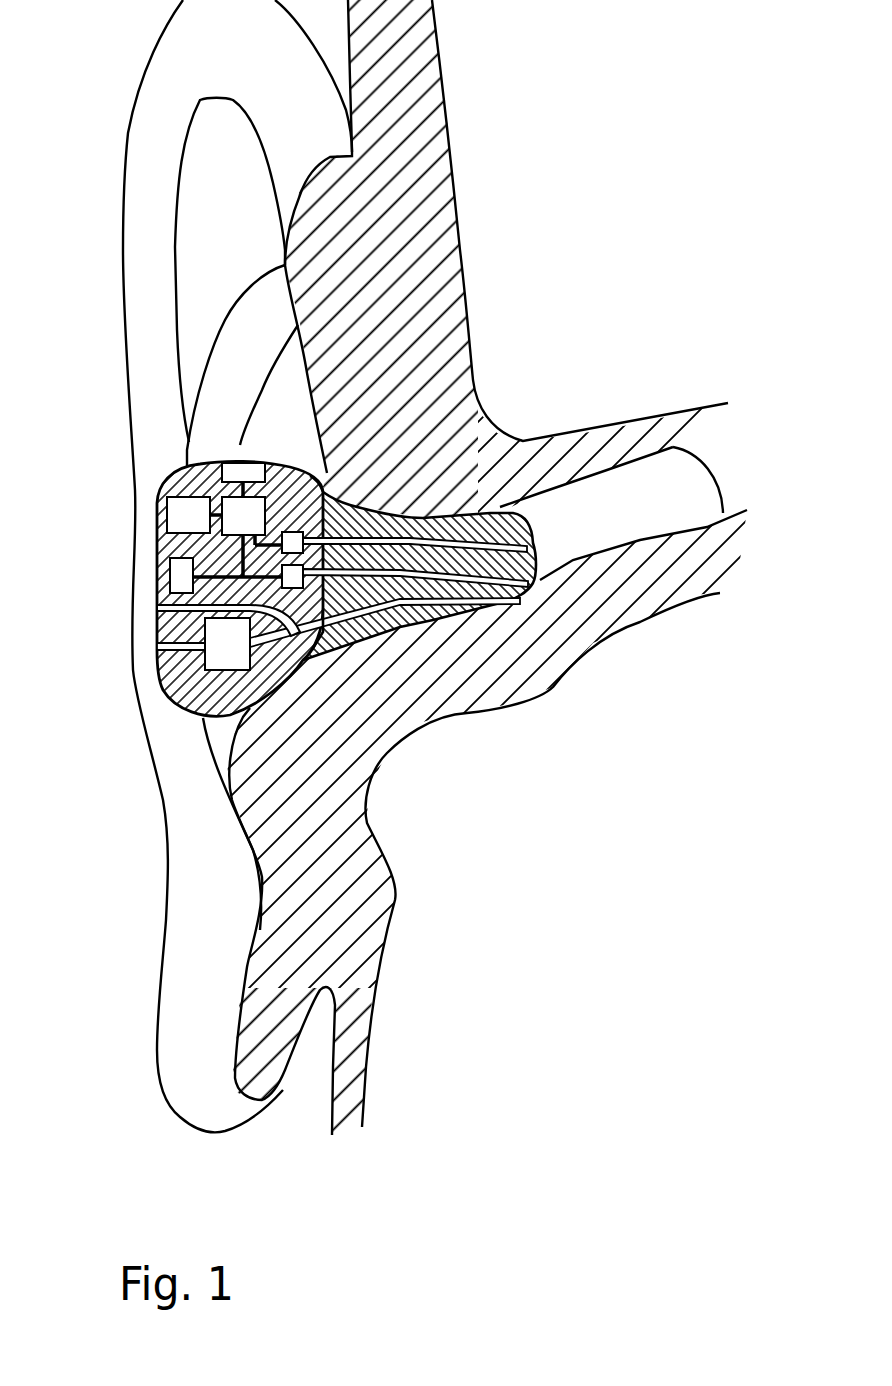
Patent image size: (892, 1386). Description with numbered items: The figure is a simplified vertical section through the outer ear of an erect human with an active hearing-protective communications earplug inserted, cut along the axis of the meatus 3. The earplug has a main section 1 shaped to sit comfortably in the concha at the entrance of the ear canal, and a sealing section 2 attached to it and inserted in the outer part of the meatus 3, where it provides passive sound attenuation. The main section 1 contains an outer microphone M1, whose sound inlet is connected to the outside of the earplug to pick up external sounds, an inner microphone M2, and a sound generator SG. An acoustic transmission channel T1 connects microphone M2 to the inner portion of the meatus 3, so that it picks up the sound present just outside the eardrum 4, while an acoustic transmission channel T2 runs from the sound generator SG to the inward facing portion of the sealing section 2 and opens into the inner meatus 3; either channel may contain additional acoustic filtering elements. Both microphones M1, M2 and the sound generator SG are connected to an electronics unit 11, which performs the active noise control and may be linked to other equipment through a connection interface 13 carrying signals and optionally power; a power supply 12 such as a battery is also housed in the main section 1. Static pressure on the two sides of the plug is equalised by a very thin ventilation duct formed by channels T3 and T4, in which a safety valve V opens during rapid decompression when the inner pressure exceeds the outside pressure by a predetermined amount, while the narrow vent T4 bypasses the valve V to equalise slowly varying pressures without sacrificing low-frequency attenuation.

The main section 1 is at (240, 588).
The sealing section 2 is at (419, 576).
The meatus 3 is at (623, 513).
The eardrum 4 is at (715, 492).
The electronics unit 11 is at (257, 513).
The power supply 12 is at (178, 513).
The connection interface 13 is at (237, 472).
The outer microphone M1 is at (175, 572).
The inner microphone M2 is at (322, 481).
The acoustic transmission channel T1 is at (472, 537).
The acoustic transmission channel T2 is at (472, 571).
The ventilation duct channel T3 is at (522, 584).
The narrow vent T4 is at (160, 613).
The safety valve V is at (220, 659).
The sound generator SG is at (323, 630).